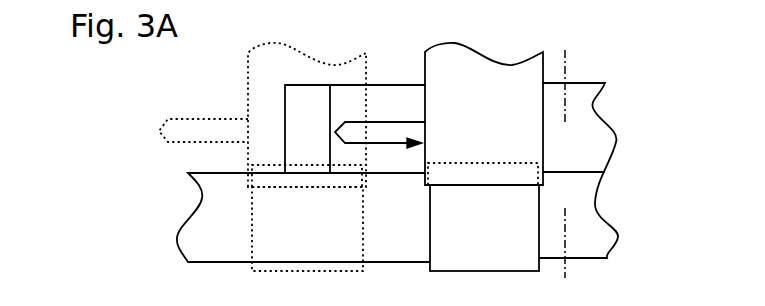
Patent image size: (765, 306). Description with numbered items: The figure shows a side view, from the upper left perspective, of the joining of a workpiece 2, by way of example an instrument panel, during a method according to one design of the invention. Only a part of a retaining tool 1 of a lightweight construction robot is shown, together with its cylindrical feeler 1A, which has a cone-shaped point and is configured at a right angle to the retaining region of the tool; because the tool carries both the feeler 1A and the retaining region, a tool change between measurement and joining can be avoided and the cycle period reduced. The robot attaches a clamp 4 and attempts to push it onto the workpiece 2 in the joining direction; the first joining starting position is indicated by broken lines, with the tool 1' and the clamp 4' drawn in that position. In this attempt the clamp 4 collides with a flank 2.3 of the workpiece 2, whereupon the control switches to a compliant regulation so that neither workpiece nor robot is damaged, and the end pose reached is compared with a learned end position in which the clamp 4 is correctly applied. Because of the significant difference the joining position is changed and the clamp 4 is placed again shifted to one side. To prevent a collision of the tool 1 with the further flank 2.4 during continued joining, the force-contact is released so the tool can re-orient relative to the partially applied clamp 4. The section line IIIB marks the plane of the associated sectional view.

The retaining tool 1 is at (467, 110).
The retaining tool in first joining starting position 1' is at (262, 115).
The feeler 1A is at (418, 130).
The workpiece 2 is at (192, 242).
The flank 2.3 is at (320, 135).
The flank 2.4 is at (592, 160).
The clamp 4 is at (484, 243).
The clamp in first joining starting position 4' is at (307, 244).
The section line IIIB is at (570, 275).